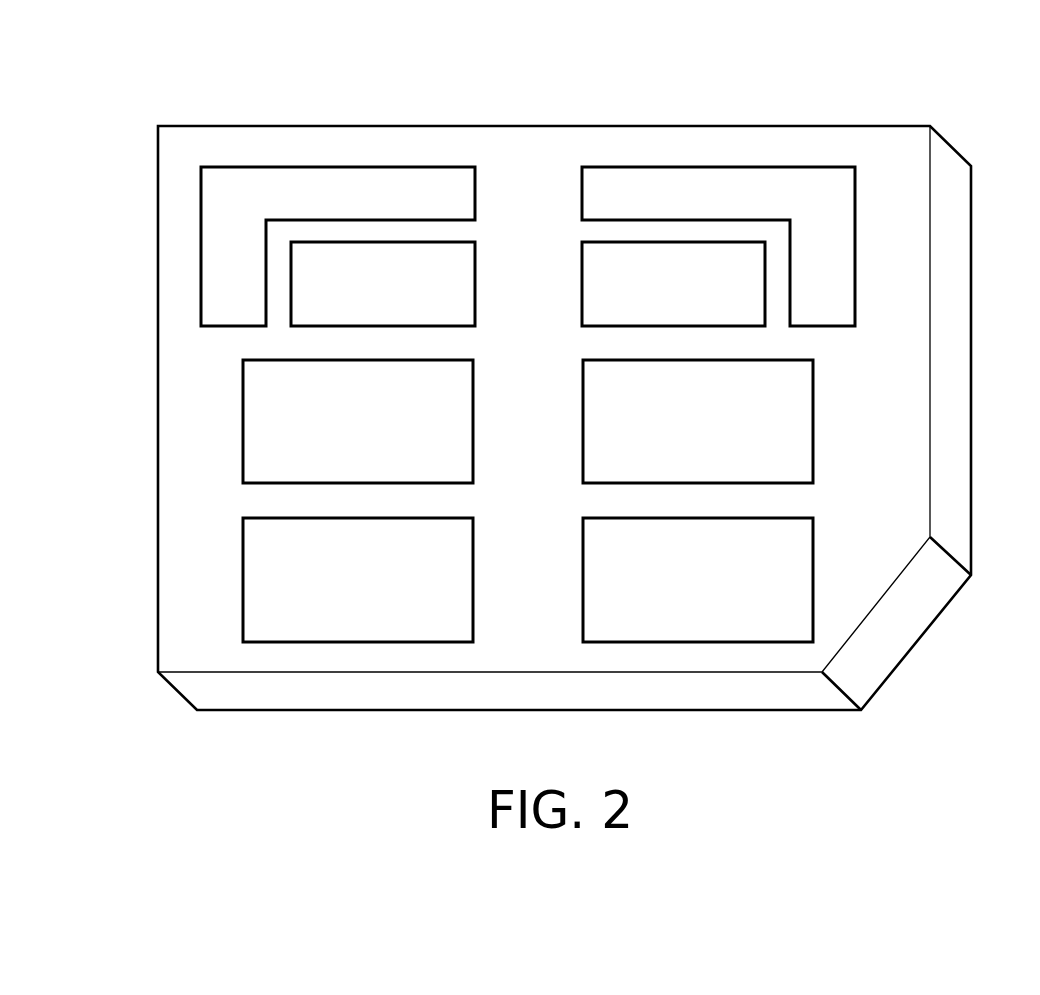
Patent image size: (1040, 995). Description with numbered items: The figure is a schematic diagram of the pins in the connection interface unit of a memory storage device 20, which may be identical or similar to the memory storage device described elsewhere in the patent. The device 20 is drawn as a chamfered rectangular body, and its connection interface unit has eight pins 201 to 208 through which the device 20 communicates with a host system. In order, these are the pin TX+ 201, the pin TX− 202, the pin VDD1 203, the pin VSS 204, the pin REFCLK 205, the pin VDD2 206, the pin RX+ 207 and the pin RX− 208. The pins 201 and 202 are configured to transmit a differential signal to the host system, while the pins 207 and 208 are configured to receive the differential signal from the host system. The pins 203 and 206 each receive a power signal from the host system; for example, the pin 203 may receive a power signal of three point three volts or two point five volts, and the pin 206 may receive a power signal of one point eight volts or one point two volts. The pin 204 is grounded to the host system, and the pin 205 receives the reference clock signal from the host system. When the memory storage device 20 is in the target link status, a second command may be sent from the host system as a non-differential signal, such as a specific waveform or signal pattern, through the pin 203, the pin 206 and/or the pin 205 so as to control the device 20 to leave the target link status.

The memory storage device 20 is at (878, 126).
The pin TX+ 201 is at (335, 167).
The pin TX− 202 is at (721, 167).
The pin VDD1 203 is at (475, 283).
The pin VSS 204 is at (582, 283).
The pin REFCLK 205 is at (243, 420).
The pin VDD2 206 is at (813, 420).
The pin RX+ 207 is at (358, 642).
The pin RX− 208 is at (705, 642).